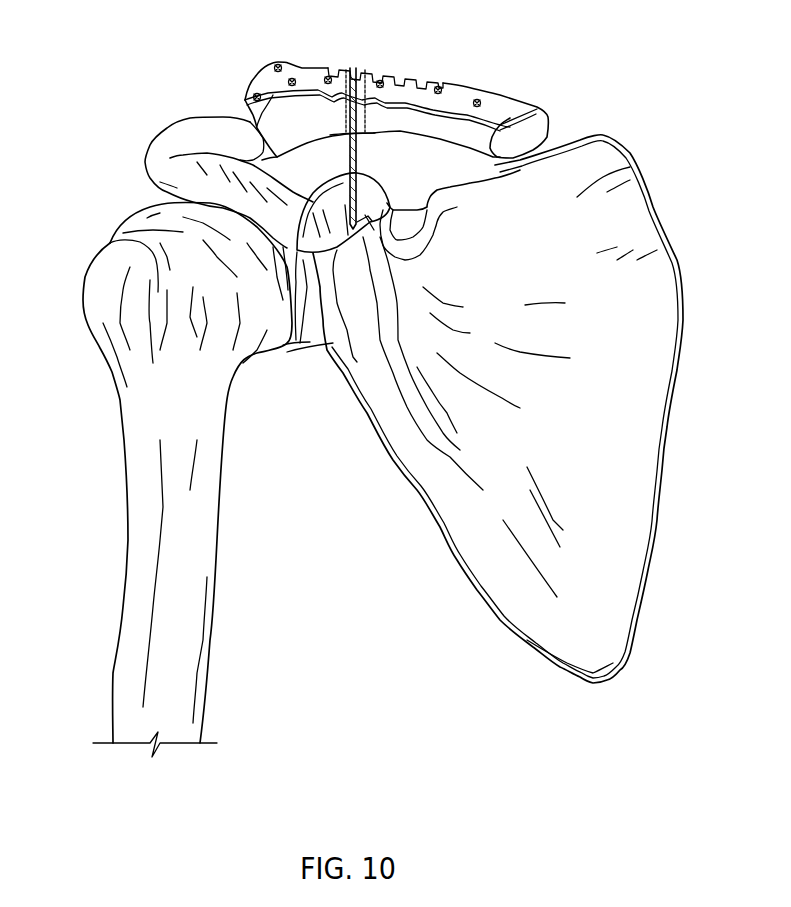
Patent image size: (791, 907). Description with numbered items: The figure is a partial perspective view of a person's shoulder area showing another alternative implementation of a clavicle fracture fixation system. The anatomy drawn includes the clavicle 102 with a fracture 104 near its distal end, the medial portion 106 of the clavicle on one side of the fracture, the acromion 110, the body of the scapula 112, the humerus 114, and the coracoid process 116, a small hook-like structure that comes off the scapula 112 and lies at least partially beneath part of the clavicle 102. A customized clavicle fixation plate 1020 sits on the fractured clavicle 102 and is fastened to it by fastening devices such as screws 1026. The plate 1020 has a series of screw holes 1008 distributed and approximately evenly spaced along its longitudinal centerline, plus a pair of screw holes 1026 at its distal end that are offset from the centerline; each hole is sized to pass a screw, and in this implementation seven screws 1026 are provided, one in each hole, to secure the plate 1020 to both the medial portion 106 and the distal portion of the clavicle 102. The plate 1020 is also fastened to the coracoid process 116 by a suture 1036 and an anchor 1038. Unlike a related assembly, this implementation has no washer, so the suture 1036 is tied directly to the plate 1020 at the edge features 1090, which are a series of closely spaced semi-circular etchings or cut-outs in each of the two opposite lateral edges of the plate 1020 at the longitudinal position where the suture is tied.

The clavicle 102 is at (433, 148).
The fracture 104 is at (369, 135).
The medial portion 106 is at (467, 133).
The acromion 110 is at (177, 122).
The scapula 112 is at (653, 433).
The humerus 114 is at (107, 245).
The coracoid process 116 is at (303, 347).
The screw holes 1008 is at (288, 64).
The clavicle fixation plate 1020 is at (527, 103).
The screws 1026 is at (478, 101).
The suture 1036 is at (347, 152).
The anchor 1038 is at (330, 345).
The edge features 1090 is at (443, 84).